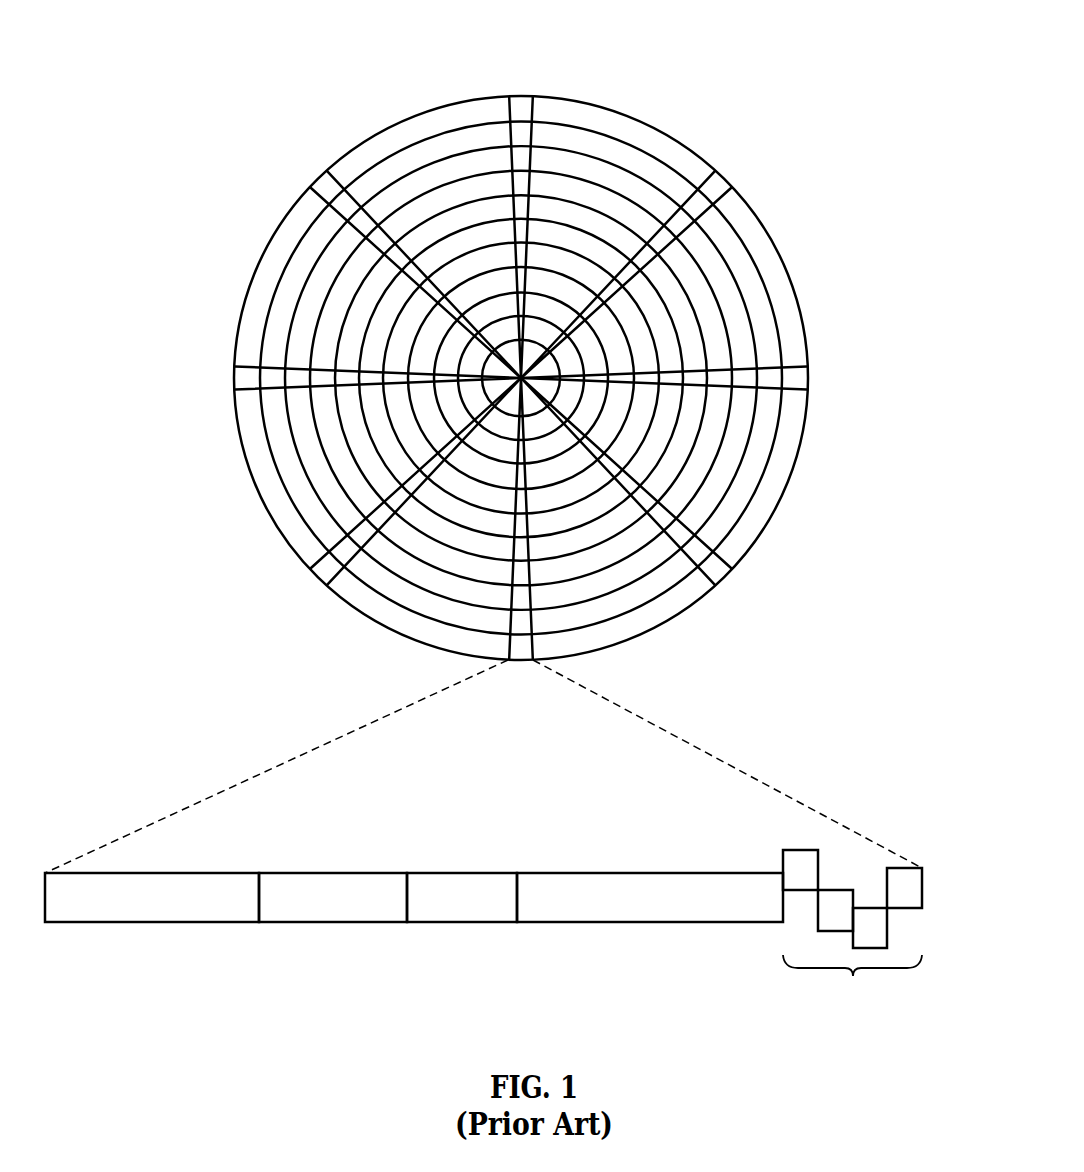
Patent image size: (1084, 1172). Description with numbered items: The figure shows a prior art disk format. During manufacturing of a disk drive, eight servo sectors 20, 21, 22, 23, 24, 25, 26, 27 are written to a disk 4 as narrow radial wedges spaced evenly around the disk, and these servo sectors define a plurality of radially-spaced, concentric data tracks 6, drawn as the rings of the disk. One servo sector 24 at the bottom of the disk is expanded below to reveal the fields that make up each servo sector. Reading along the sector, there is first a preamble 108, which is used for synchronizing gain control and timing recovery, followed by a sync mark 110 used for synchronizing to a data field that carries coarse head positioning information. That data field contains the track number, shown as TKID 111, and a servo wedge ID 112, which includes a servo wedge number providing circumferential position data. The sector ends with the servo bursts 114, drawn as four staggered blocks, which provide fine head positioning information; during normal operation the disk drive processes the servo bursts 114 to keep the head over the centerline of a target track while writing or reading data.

The disk 4 is at (521, 341).
The data tracks 6 is at (595, 140).
The servo sector 20 is at (523, 97).
The servo sector 21 is at (727, 180).
The servo sector 22 is at (800, 377).
The servo sector 23 is at (723, 575).
The servo sector 24 is at (318, 738).
The servo sector 25 is at (318, 575).
The servo sector 26 is at (242, 378).
The servo sector 27 is at (320, 180).
The preamble 108 is at (135, 925).
The sync mark 110 is at (327, 925).
The TKID 111 is at (480, 925).
The servo wedge ID 112 is at (672, 925).
The servo bursts 114 is at (790, 840).